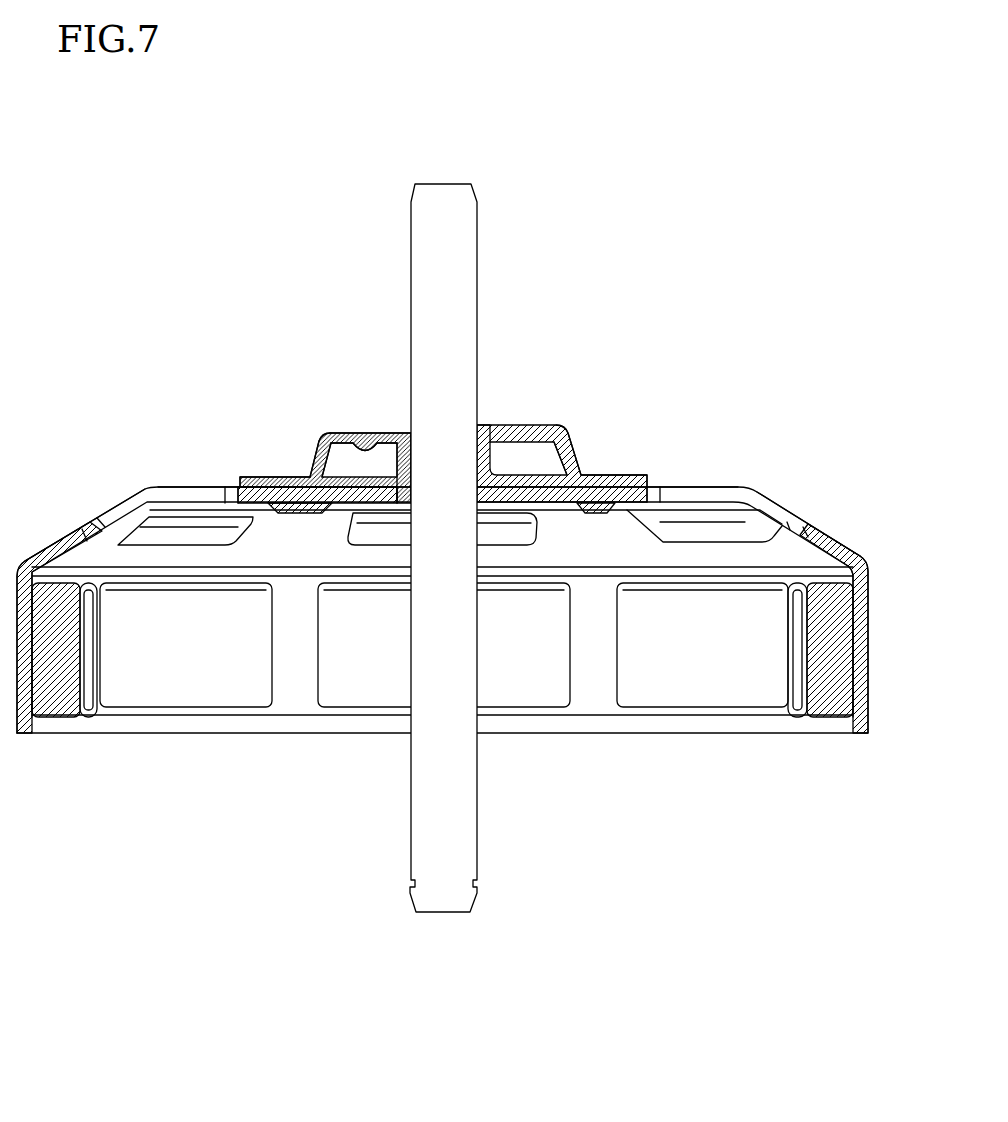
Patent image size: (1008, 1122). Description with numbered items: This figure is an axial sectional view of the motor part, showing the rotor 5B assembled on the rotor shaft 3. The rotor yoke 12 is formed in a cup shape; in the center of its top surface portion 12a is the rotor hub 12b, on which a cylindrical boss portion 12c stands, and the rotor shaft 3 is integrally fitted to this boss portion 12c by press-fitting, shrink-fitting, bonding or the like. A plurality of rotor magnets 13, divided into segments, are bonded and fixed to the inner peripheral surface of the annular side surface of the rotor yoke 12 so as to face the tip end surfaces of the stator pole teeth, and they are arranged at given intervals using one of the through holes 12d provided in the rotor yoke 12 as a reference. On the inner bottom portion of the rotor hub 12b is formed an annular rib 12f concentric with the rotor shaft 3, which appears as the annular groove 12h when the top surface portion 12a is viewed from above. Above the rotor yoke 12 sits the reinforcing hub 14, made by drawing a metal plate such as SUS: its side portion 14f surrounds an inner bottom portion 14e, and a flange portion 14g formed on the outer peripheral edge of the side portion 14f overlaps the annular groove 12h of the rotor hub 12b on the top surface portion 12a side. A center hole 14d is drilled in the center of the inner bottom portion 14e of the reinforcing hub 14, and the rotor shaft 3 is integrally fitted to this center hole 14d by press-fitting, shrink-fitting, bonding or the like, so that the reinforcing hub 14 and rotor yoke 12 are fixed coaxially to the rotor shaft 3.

The rotor shaft 3 is at (470, 238).
The rotor 5B is at (751, 356).
The rotor yoke 12 is at (870, 586).
The top surface portion 12a is at (697, 487).
The rotor hub 12b is at (503, 478).
The cylindrical boss portion 12c is at (485, 427).
The through holes 12d is at (123, 503).
The annular rib 12f is at (655, 488).
The annular groove 12h is at (603, 470).
The rotor magnets 13 is at (347, 700).
The reinforcing hub 14 is at (330, 370).
The center hole 14d is at (406, 432).
The inner bottom portion 14e is at (362, 451).
The side portion 14f is at (312, 460).
The flange portion 14g is at (262, 476).